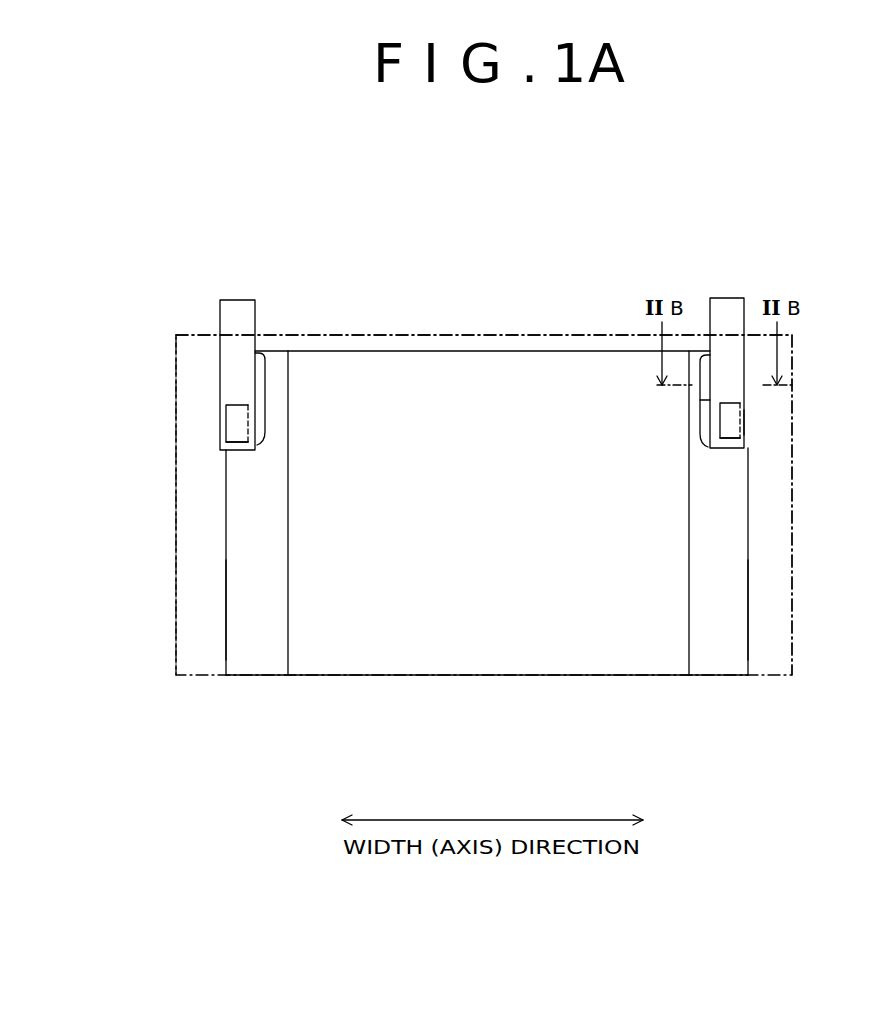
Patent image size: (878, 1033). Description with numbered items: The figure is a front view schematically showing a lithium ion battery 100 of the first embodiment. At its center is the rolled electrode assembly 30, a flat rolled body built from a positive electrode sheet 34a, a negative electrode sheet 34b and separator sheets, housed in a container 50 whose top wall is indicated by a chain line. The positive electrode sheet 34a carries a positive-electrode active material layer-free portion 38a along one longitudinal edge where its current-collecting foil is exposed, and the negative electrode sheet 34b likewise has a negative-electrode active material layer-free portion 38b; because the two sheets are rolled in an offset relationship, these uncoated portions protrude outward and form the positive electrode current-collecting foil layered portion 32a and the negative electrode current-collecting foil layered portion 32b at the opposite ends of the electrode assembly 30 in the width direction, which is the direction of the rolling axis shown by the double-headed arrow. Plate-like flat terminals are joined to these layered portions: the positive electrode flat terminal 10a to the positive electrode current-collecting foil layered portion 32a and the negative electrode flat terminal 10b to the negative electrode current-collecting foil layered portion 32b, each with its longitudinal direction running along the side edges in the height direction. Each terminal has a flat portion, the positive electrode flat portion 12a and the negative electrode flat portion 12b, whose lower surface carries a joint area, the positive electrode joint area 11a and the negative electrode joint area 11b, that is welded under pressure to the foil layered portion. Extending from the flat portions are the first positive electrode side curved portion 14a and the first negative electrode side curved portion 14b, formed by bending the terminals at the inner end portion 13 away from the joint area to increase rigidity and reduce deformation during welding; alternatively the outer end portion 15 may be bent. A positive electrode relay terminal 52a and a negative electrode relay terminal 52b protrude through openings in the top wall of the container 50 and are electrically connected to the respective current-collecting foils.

The lithium ion battery 100 is at (207, 222).
The electrode assembly 30 is at (473, 663).
The container 50 is at (400, 335).
The negative electrode current-collecting foil layered portion 32b is at (257, 663).
The negative-electrode active material layer-free portion 38b is at (262, 607).
The positive electrode current-collecting foil layered portion 32a is at (710, 660).
The positive-electrode active material layer-free portion 38a is at (721, 606).
The negative electrode relay terminal 52b is at (238, 306).
The positive electrode relay terminal 52a is at (724, 308).
The first negative electrode side curved portion 14b is at (265, 432).
The first positive electrode side curved portion 14a is at (700, 443).
The negative electrode flat portion 12b is at (228, 392).
The positive electrode flat portion 12a is at (733, 388).
The negative electrode flat terminal 10b is at (212, 377).
The positive electrode flat terminal 10a is at (748, 350).
The negative electrode joint area 11b is at (230, 432).
The positive electrode joint area 11a is at (743, 432).
The inner end portion 13 is at (702, 417).
The outer end portion 15 is at (745, 423).
The negative electrode sheet 34b is at (226, 620).
The positive electrode sheet 34a is at (748, 590).